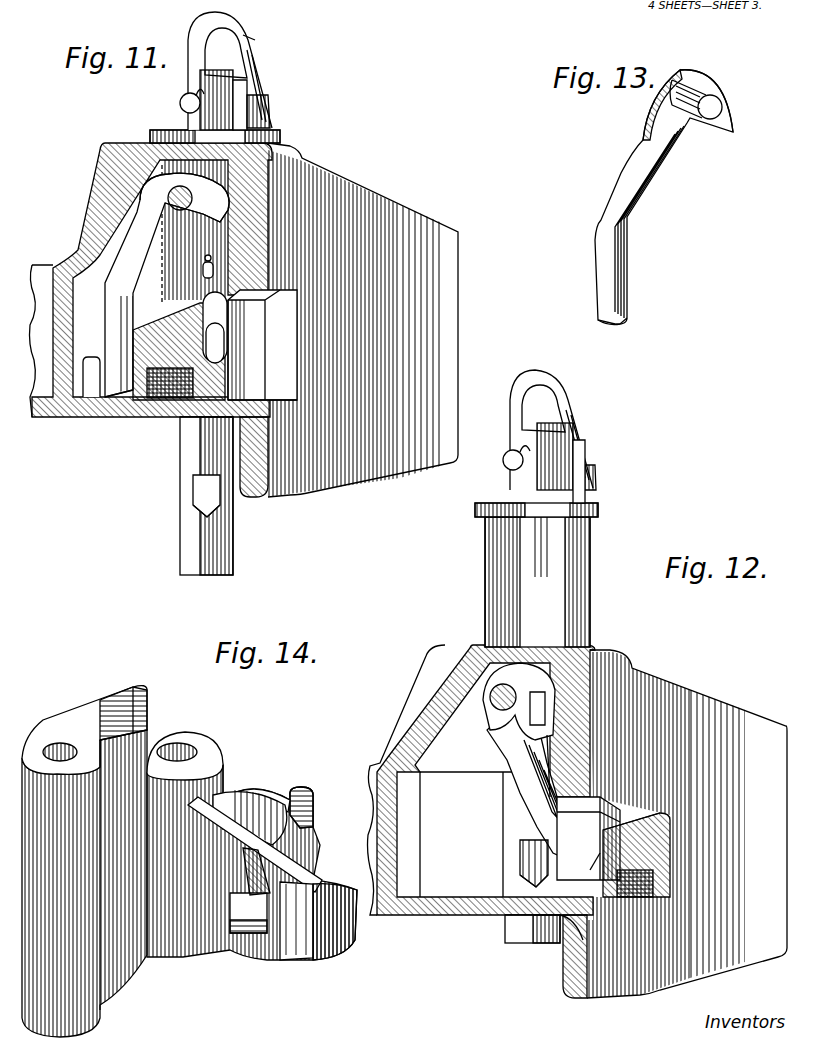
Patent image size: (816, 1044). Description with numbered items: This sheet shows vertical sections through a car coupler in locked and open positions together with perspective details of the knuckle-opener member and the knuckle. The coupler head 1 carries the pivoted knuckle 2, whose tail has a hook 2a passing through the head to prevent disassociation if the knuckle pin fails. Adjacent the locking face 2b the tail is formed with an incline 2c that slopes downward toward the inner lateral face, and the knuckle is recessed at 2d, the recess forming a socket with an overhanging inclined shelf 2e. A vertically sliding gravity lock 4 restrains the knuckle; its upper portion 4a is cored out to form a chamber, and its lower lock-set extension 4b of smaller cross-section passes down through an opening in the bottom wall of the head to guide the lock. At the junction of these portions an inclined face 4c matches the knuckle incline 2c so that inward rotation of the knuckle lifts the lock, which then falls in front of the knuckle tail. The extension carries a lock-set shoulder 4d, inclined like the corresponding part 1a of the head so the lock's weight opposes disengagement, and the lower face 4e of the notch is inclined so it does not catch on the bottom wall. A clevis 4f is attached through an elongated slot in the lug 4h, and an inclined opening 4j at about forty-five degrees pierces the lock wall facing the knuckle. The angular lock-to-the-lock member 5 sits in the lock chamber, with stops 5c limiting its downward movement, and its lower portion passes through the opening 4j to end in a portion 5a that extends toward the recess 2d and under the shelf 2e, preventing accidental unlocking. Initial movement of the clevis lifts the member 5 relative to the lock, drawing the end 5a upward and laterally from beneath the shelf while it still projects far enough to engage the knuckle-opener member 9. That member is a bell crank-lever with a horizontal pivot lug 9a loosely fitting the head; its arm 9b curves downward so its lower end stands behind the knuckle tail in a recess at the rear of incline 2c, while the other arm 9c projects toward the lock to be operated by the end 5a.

In FIG. 11, the coupler head 1 is at (420, 221).
In FIG. 12, the coupler head 1 is at (693, 692).
In FIG. 11, the inclined part of coupler head 1a is at (190, 418).
In FIG. 12, the inclined part of coupler head 1a is at (517, 905).
In FIG. 11, the knuckle 2 is at (125, 413).
In FIG. 12, the knuckle 2 is at (596, 880).
In FIG. 14, the knuckle 2 is at (145, 985).
In FIG. 14, the hook 2a is at (243, 945).
In FIG. 12, the locking face 2b is at (672, 873).
In FIG. 14, the locking face 2b is at (292, 948).
In FIG. 11, the incline 2c is at (95, 355).
In FIG. 12, the incline 2c is at (643, 830).
In FIG. 14, the incline 2c is at (313, 887).
In FIG. 11, the recess 2d is at (165, 413).
In FIG. 11, the overhanging inclined shelf 2e is at (205, 303).
In FIG. 14, the overhanging inclined shelf 2e is at (310, 832).
In FIG. 11, the gravity lock 4 is at (284, 137).
In FIG. 12, the gravity lock 4 is at (600, 512).
In FIG. 11, the upper portion of lock 4a is at (165, 171).
In FIG. 12, the upper portion of lock 4a is at (492, 580).
In FIG. 11, the lock-set extension 4b is at (232, 543).
In FIG. 12, the lock-set extension 4b is at (512, 943).
In FIG. 11, the inclined face 4c is at (240, 366).
In FIG. 12, the inclined face 4c is at (540, 735).
In FIG. 11, the lock-set shoulder 4d is at (195, 478).
In FIG. 12, the lock-set shoulder 4d is at (520, 842).
In FIG. 11, the lower face of lock-set notch 4e is at (200, 510).
In FIG. 12, the lower face of lock-set notch 4e is at (528, 880).
In FIG. 11, the clevis 4f is at (243, 44).
In FIG. 12, the clevis 4f is at (563, 402).
In FIG. 11, the lug 4h is at (242, 84).
In FIG. 12, the lug 4h is at (575, 500).
In FIG. 11, the inclined opening 4j is at (228, 262).
In FIG. 12, the inclined opening 4j is at (498, 712).
In FIG. 11, the lock-to-the-lock member 5 is at (258, 98).
In FIG. 12, the lock-to-the-lock member 5 is at (580, 470).
In FIG. 11, the lower end portion 5a is at (227, 340).
In FIG. 12, the lower end portion 5a is at (570, 663).
In FIG. 11, the stop 5c is at (268, 119).
In FIG. 12, the stop 5c is at (595, 490).
In FIG. 11, the knuckle-opener member 9 is at (150, 230).
In FIG. 13, the knuckle-opener member 9 is at (625, 182).
In FIG. 12, the knuckle-opener member 9 is at (522, 775).
In FIG. 11, the pivot lug 9a is at (172, 197).
In FIG. 13, the pivot lug 9a is at (705, 119).
In FIG. 12, the pivot lug 9a is at (483, 695).
In FIG. 11, the knuckle-engaging arm 9b is at (103, 397).
In FIG. 13, the knuckle-engaging arm 9b is at (630, 288).
In FIG. 12, the knuckle-engaging arm 9b is at (583, 850).
In FIG. 11, the lock-side arm 9c is at (215, 203).
In FIG. 13, the lock-side arm 9c is at (723, 93).
In FIG. 12, the lock-side arm 9c is at (557, 665).